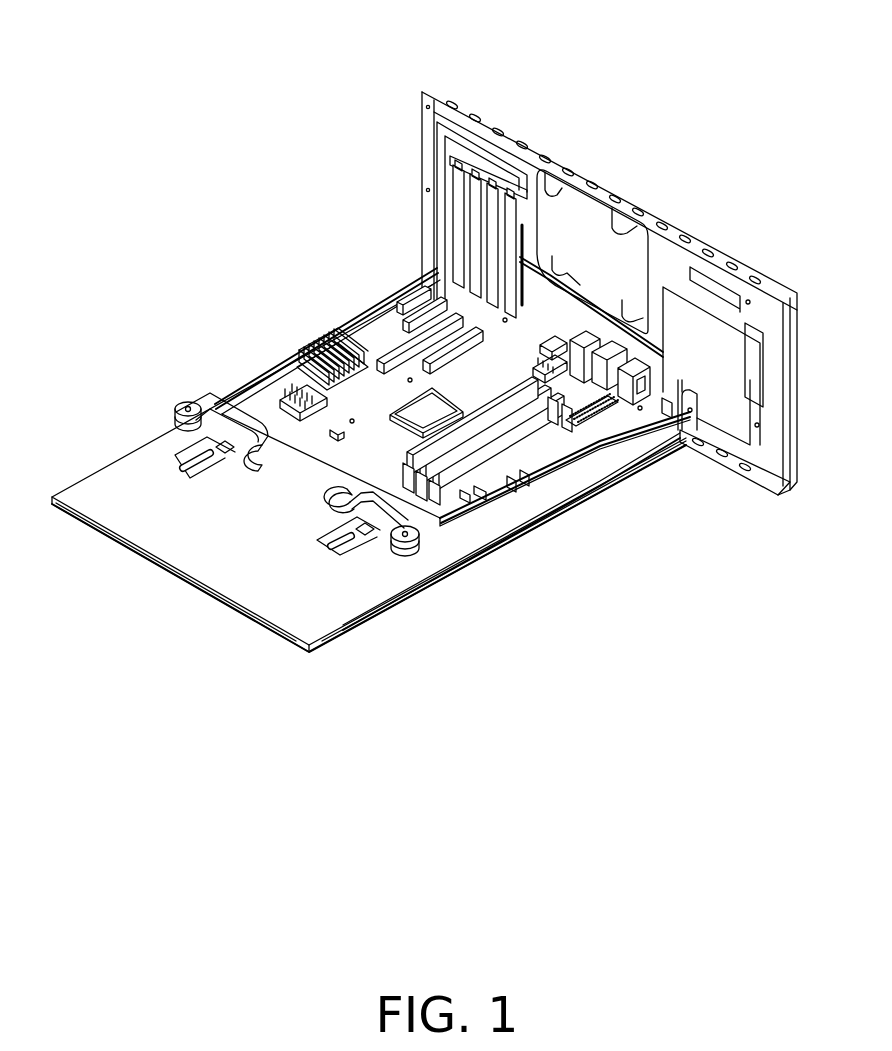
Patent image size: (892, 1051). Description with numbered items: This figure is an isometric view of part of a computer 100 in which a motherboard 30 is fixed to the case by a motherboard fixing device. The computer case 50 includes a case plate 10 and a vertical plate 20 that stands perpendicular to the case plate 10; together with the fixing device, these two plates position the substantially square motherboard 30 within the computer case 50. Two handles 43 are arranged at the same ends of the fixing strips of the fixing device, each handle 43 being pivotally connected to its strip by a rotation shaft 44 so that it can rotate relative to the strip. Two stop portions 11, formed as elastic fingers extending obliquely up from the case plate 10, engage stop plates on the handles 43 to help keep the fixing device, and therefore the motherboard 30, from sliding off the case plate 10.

The computer 100 is at (388, 34).
The case plate 10 is at (520, 510).
The vertical plate 20 is at (712, 450).
The motherboard 30 is at (365, 332).
The handle 43 is at (245, 425).
The rotation shaft 44 is at (187, 407).
The stop portion 11 is at (207, 447).
The computer case 50 is at (703, 522).